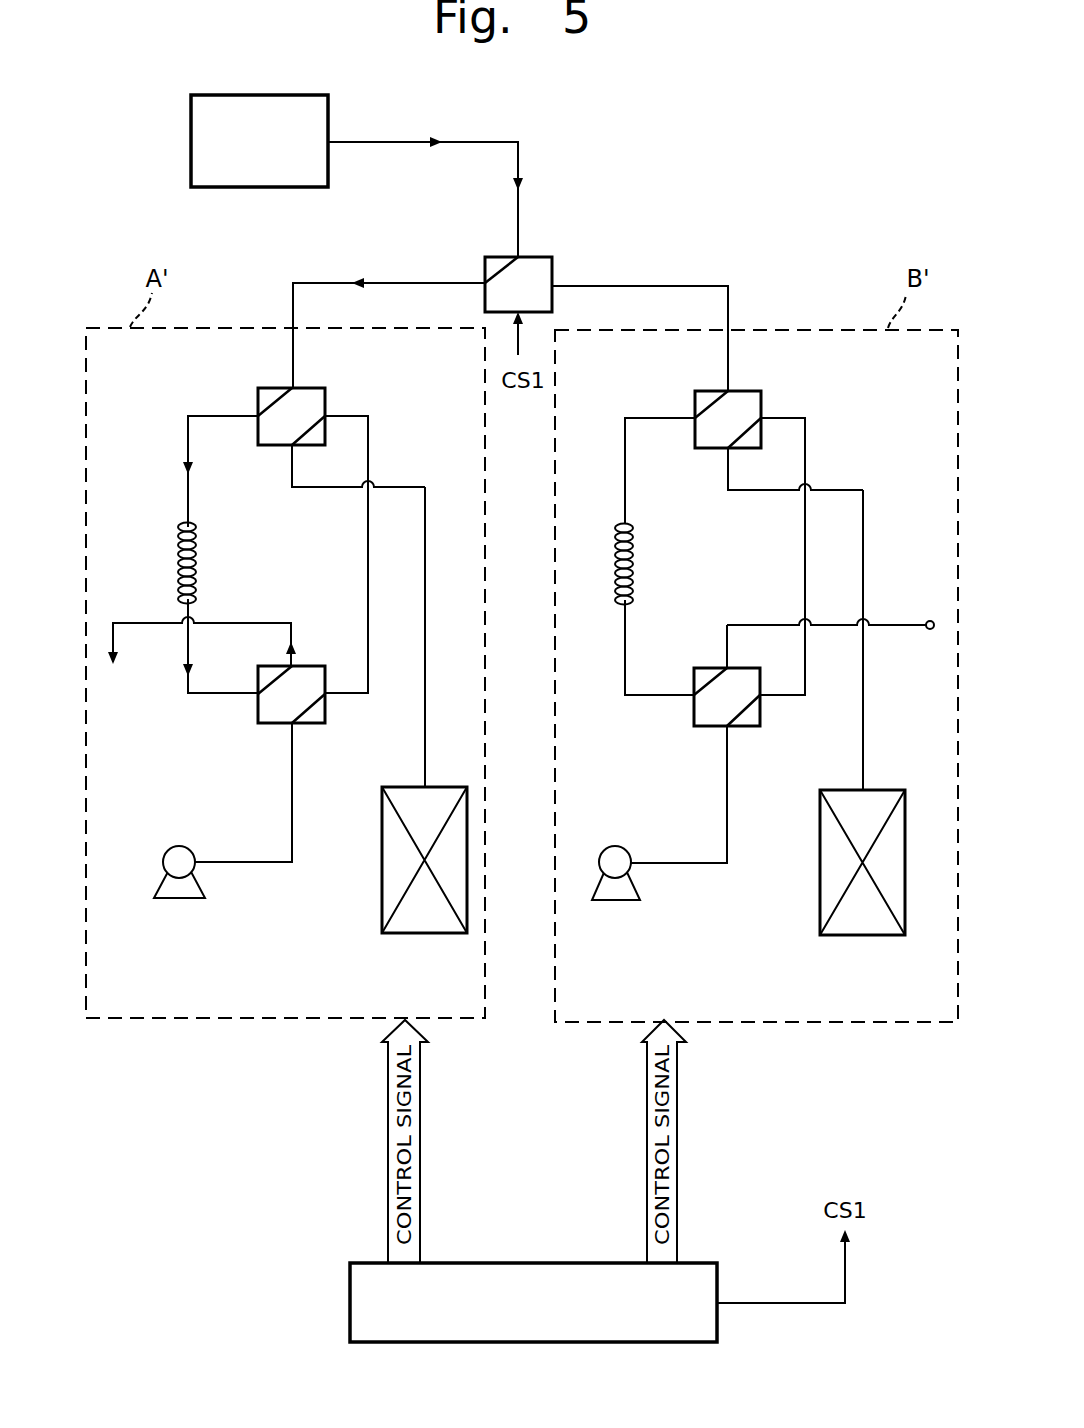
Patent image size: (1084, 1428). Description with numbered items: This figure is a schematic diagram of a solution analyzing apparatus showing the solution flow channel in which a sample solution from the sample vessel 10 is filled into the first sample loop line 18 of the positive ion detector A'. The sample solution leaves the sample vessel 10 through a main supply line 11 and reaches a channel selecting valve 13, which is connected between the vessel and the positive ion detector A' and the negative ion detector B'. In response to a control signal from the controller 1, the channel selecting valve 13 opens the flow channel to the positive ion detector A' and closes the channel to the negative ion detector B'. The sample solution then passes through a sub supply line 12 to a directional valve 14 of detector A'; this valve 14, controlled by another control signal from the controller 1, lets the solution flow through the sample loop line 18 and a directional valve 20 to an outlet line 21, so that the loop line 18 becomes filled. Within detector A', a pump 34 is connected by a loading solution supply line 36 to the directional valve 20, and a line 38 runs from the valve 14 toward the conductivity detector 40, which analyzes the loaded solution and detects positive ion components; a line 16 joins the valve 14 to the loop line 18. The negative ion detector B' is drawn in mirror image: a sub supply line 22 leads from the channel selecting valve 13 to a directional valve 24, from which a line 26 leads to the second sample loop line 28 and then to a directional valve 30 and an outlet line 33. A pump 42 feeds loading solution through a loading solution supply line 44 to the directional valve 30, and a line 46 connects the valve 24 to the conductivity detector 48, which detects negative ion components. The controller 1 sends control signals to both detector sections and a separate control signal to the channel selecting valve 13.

The controller 1 is at (502, 1263).
The sample vessel 10 is at (328, 105).
The main supply line 11 is at (518, 142).
The sub supply line 12 is at (403, 283).
The channel selecting valve 13 is at (538, 257).
The directional valve 14 is at (325, 392).
The line 16 is at (187, 428).
The first sample loop line 18 is at (178, 567).
The directional valve 20 is at (257, 712).
The outlet line 21 is at (135, 623).
The sub supply line 22 is at (683, 286).
The directional valve 24 is at (761, 393).
The line 26 is at (625, 448).
The second sample loop line 28 is at (632, 547).
The directional valve 30 is at (692, 717).
The outlet line 33 is at (888, 625).
The pump 34 is at (158, 878).
The loading solution supply line 36 is at (273, 865).
The line 38 is at (425, 742).
The conductivity detector 40 is at (382, 917).
The pump 42 is at (597, 880).
The loading solution supply line 44 is at (700, 865).
The line 46 is at (860, 688).
The conductivity detector 48 is at (820, 933).